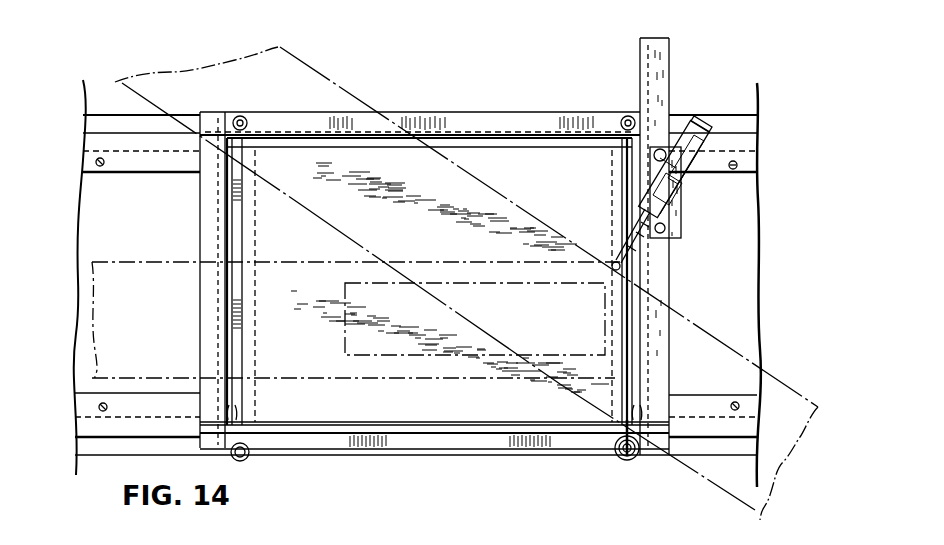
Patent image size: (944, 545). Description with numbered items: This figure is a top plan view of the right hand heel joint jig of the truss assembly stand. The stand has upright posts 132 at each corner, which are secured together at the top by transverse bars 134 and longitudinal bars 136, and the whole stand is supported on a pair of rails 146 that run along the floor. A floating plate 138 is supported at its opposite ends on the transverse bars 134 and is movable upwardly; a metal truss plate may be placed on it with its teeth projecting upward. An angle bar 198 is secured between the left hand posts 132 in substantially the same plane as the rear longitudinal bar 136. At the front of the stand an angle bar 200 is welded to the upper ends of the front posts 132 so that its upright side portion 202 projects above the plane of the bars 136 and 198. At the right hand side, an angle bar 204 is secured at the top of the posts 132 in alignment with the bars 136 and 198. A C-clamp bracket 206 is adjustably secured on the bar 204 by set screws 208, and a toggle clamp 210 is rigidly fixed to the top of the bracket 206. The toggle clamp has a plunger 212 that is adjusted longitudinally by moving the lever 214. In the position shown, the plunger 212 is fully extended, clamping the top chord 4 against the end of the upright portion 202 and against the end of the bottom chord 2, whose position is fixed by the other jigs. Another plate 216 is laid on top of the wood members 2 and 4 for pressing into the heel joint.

The bottom chord 2 is at (340, 380).
The top chord 4 is at (482, 172).
The upright posts 132 is at (228, 112).
The transverse bars 134 is at (240, 243).
The longitudinal bars 136 is at (466, 122).
The floating plate 138 is at (275, 345).
The rails 146 is at (742, 145).
The angle bar 198 is at (205, 235).
The angle bar 200 is at (459, 450).
The upright side portion 202 is at (392, 428).
The angle bar 204 is at (658, 370).
The C-clamp bracket 206 is at (683, 226).
The set screws 208 is at (663, 149).
The toggle clamp 210 is at (694, 174).
The plunger 212 is at (626, 253).
The lever 214 is at (688, 203).
The plate 216 is at (485, 283).